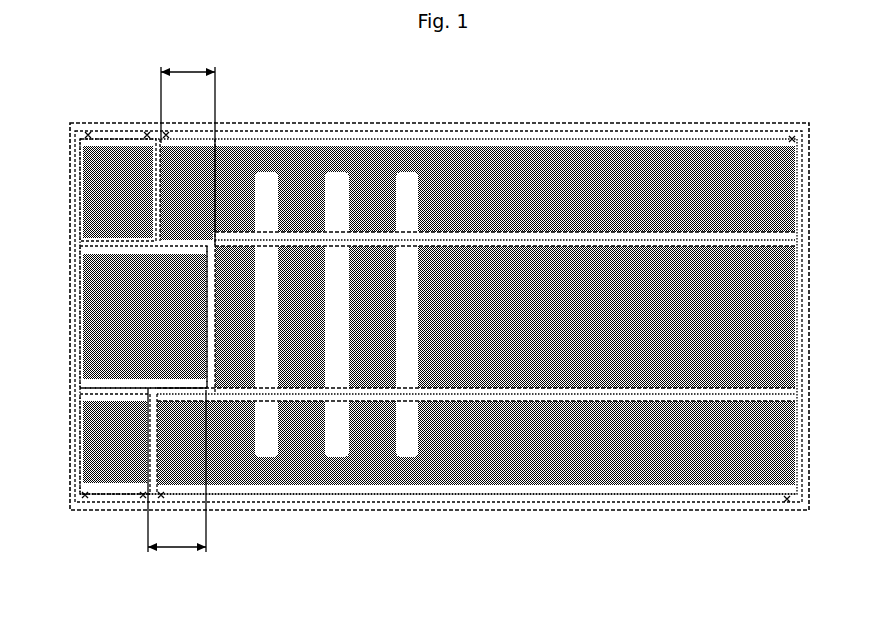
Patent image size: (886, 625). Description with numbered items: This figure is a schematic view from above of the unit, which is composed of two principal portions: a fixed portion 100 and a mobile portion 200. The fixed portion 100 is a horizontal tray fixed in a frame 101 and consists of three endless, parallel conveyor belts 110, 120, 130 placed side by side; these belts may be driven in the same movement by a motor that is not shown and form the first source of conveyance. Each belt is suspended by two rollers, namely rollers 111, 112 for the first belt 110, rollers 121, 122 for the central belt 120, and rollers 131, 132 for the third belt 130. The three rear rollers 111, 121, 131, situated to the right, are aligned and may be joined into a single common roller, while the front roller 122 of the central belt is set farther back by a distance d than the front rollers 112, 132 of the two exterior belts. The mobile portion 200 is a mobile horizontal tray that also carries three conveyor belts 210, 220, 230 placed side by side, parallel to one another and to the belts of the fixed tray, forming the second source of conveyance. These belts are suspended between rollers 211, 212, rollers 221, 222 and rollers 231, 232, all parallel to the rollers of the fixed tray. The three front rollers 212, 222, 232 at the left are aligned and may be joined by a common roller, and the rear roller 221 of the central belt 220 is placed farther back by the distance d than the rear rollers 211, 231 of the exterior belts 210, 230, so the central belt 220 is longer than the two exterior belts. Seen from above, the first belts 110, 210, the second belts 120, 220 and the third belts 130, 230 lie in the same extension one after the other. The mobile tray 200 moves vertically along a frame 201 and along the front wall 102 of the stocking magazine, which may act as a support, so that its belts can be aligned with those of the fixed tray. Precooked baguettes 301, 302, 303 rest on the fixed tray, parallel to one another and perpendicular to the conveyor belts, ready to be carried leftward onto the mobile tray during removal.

The fixed portion 100 is at (614, 452).
The frame 101 is at (690, 128).
The front wall 102 is at (73, 375).
The first conveyor belt 110 is at (485, 177).
The rear roller 111 is at (792, 137).
The front roller 112 is at (167, 137).
The central conveyor belt 120 is at (473, 325).
The rear roller 121 is at (788, 390).
The front roller 122 is at (215, 243).
The third conveyor belt 130 is at (493, 440).
The rear roller 131 is at (787, 500).
The front roller 132 is at (162, 488).
The mobile portion 200 is at (97, 266).
The frame 201 is at (105, 498).
The first conveyor belt 210 is at (115, 210).
The rear roller 211 is at (147, 134).
The front roller 212 is at (88, 134).
The central conveyor belt 220 is at (105, 327).
The rear roller 221 is at (207, 395).
The front roller 222 is at (87, 383).
The third conveyor belt 230 is at (97, 420).
The rear roller 231 is at (143, 497).
The front roller 232 is at (87, 497).
The first baguette 301 is at (263, 207).
The second baguette 302 is at (335, 183).
The third baguette 303 is at (407, 193).